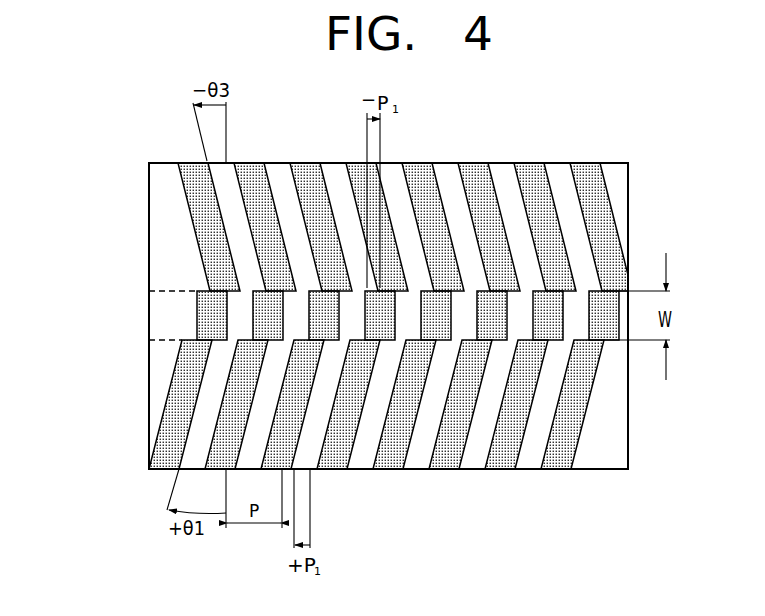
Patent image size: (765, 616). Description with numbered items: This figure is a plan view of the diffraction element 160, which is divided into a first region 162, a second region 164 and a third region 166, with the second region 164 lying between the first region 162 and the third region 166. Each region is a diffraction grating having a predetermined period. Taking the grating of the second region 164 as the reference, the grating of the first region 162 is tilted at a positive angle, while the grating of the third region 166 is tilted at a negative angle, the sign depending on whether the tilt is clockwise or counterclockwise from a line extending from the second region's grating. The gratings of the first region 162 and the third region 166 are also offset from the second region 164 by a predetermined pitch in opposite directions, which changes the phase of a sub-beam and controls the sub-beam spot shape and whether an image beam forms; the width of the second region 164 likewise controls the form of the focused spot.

The diffraction element 160 is at (335, 316).
The third region 166 is at (137, 165).
The second region 164 is at (137, 291).
The first region 162 is at (345, 404).